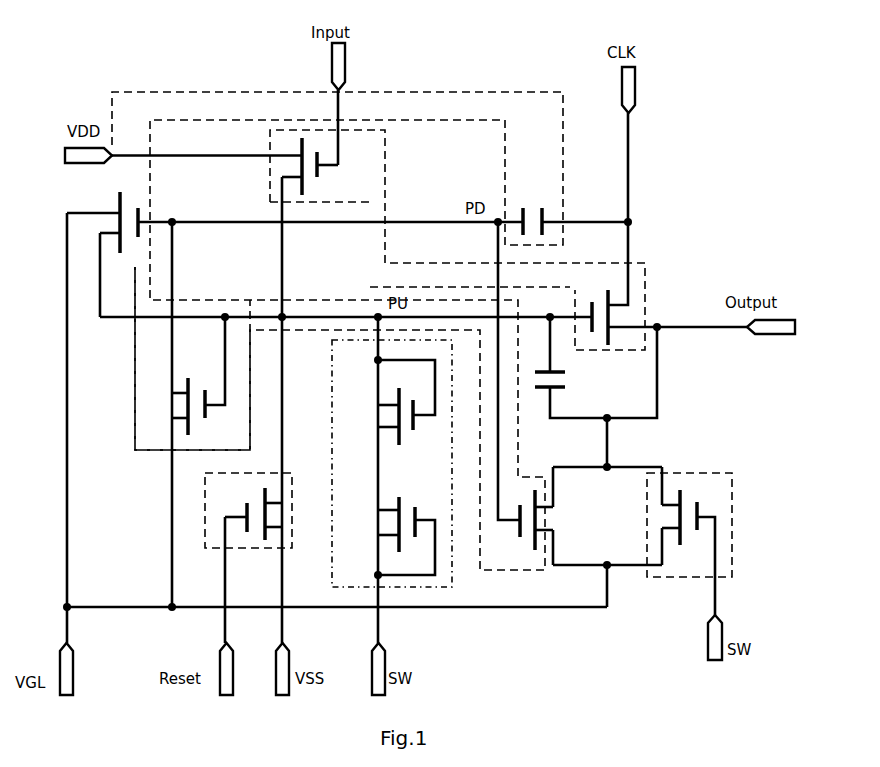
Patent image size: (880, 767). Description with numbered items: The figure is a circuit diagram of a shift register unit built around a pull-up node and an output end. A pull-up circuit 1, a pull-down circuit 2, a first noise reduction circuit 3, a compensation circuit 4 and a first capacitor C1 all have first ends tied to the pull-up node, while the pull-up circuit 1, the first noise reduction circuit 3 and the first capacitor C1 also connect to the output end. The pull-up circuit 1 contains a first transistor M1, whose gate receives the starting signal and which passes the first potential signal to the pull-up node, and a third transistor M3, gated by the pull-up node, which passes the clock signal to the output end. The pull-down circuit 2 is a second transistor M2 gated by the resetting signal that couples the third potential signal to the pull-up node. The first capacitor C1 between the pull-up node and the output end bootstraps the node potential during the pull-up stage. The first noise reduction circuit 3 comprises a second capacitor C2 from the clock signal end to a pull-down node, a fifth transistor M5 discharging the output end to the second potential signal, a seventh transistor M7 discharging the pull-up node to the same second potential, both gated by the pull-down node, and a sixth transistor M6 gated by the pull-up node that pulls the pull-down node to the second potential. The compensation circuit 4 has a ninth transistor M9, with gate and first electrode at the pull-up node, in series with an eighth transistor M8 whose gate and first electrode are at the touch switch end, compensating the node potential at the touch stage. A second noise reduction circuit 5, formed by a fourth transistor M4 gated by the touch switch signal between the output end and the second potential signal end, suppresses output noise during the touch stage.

The pull-up circuit 1 is at (648, 265).
The pull-down circuit 2 is at (205, 548).
The first noise reduction circuit 3 is at (133, 450).
The compensation circuit 4 is at (452, 590).
The second noise reduction circuit 5 is at (735, 472).
The first transistor M1 is at (337, 166).
The second transistor M2 is at (248, 513).
The third transistor M3 is at (593, 311).
The fourth transistor M4 is at (684, 532).
The fifth transistor M5 is at (525, 527).
The sixth transistor M6 is at (172, 406).
The seventh transistor M7 is at (112, 219).
The eighth transistor M8 is at (388, 536).
The ninth transistor M9 is at (388, 402).
The first capacitor C1 is at (565, 381).
The second capacitor C2 is at (535, 210).